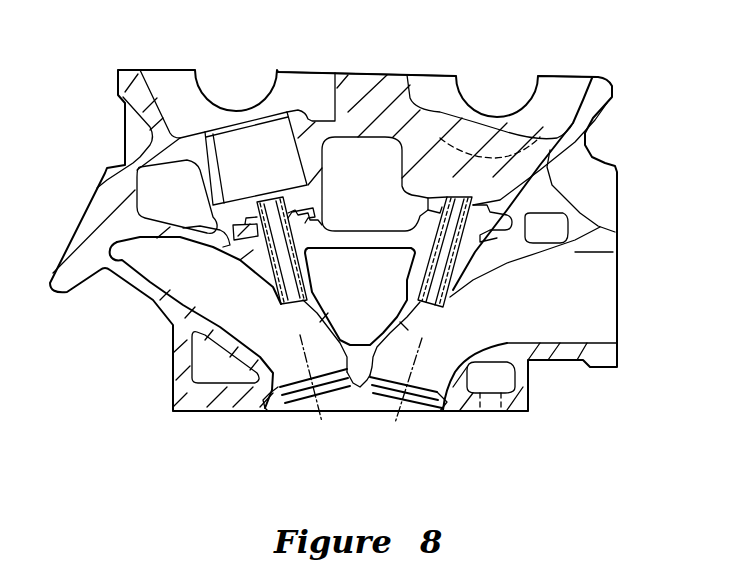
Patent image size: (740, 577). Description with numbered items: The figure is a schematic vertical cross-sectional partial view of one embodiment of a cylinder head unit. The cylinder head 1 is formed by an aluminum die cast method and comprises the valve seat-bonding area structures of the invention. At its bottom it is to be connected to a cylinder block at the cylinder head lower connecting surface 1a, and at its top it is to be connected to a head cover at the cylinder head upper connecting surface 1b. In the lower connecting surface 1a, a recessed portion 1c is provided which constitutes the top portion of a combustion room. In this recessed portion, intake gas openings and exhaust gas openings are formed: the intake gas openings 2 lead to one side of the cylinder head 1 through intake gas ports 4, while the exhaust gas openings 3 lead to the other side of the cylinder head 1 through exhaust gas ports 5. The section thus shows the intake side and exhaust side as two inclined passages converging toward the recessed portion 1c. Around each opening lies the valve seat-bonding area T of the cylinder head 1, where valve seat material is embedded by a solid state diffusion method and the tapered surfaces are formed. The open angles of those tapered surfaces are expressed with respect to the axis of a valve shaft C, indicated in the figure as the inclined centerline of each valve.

The cylinder head 1 is at (93, 78).
The cylinder head lower connecting surface 1a is at (472, 414).
The cylinder head upper connecting surface 1b is at (605, 77).
The recessed portion 1c is at (349, 398).
The intake gas openings 2 is at (300, 385).
The exhaust gas openings 3 is at (400, 395).
The intake gas ports 4 is at (160, 312).
The exhaust gas ports 5 is at (558, 343).
The valve seat-bonding area T is at (285, 397).
The axis of a valve shaft C is at (293, 340).